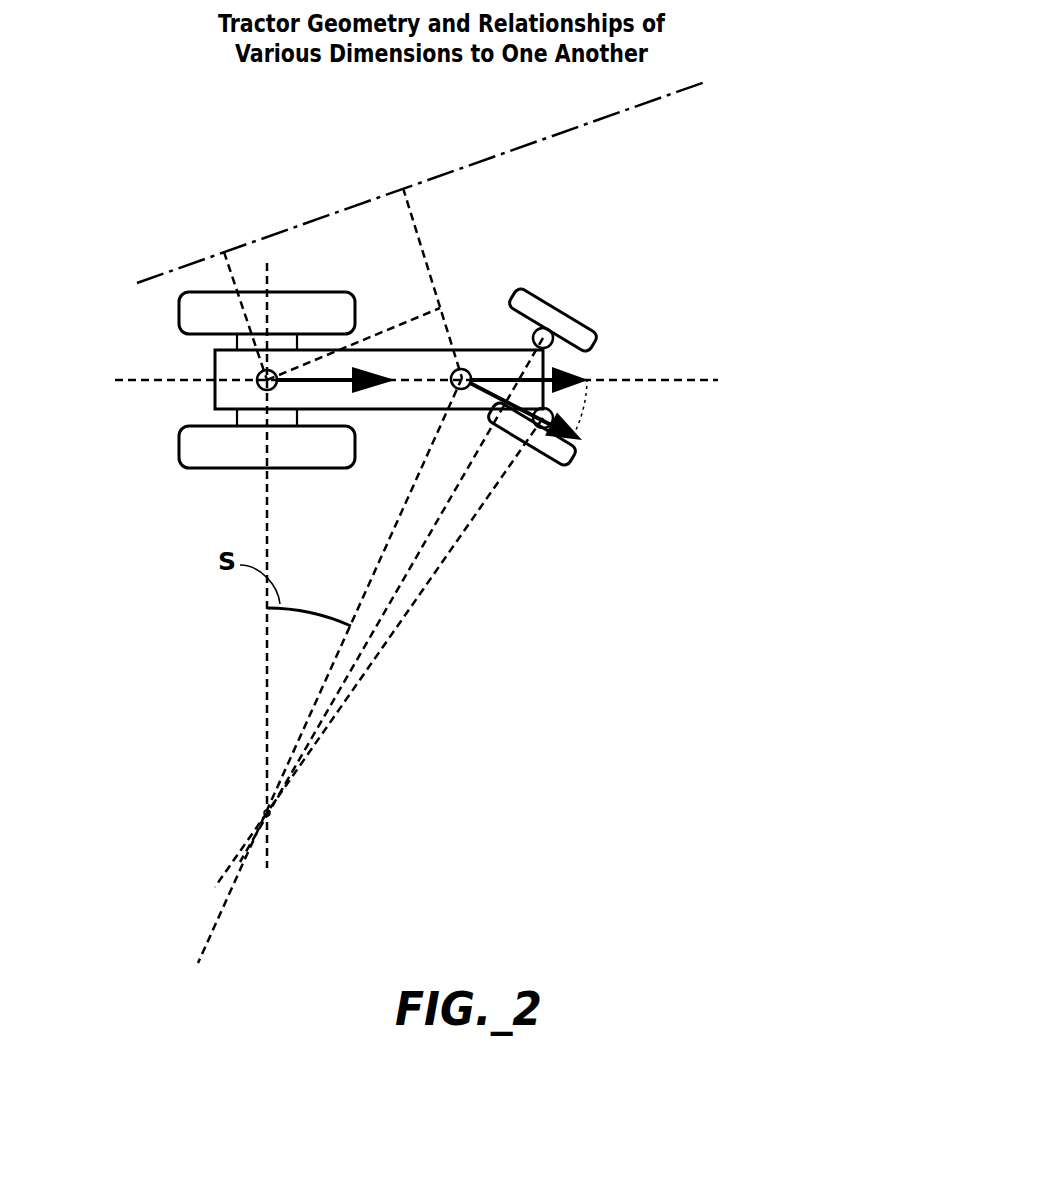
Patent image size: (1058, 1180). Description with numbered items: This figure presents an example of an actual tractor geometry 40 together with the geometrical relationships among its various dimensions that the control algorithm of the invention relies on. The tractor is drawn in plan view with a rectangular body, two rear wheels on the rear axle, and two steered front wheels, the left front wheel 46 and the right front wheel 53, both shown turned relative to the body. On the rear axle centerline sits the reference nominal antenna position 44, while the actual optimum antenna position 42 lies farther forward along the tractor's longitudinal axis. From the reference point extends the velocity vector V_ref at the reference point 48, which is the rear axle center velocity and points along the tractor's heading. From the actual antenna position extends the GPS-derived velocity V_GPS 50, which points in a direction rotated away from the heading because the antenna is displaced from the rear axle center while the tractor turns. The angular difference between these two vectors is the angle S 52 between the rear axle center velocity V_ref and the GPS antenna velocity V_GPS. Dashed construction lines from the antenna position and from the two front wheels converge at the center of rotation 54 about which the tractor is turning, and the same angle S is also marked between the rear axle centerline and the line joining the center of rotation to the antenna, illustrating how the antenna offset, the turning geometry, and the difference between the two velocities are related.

The tractor geometry 40 is at (118, 879).
The actual optimum antenna position 42 is at (462, 368).
The reference nominal antenna position 44 is at (256, 381).
The left front wheel 46 is at (580, 318).
The velocity vector V_ref at the reference point 48 is at (588, 378).
The GPS-derived velocity V_GPS 50 is at (588, 442).
The angle S 52 is at (590, 398).
The right front wheel 53 is at (532, 456).
The center of rotation 54 is at (270, 814).